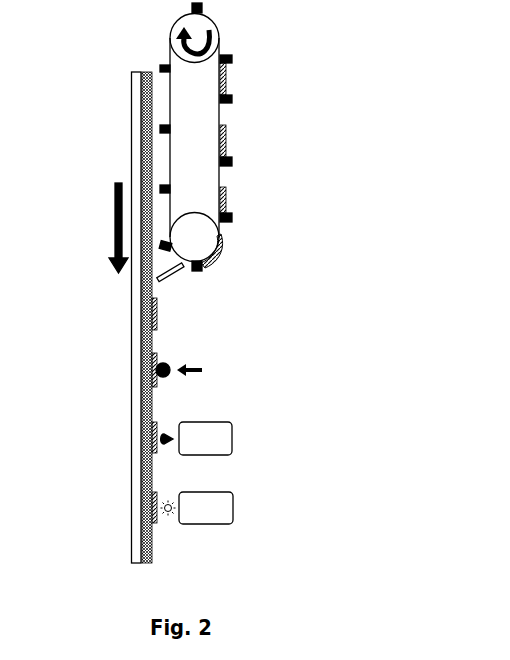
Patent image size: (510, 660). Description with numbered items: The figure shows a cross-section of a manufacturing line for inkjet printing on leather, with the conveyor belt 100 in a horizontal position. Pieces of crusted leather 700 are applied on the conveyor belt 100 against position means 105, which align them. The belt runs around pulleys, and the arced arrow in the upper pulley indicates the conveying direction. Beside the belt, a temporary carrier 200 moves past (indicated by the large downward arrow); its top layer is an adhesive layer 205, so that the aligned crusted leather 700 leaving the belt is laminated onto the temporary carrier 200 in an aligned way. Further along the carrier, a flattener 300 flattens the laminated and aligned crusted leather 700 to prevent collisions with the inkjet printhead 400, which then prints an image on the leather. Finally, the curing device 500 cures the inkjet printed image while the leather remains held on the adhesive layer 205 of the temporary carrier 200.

The conveyor belt 100 is at (220, 120).
The position means 105 is at (227, 158).
The temporary carrier 200 is at (133, 127).
The adhesive layer 205 is at (143, 72).
The flattener 300 is at (167, 364).
The inkjet printhead 400 is at (220, 440).
The curing device 500 is at (212, 510).
The crusted leather 700 is at (225, 77).